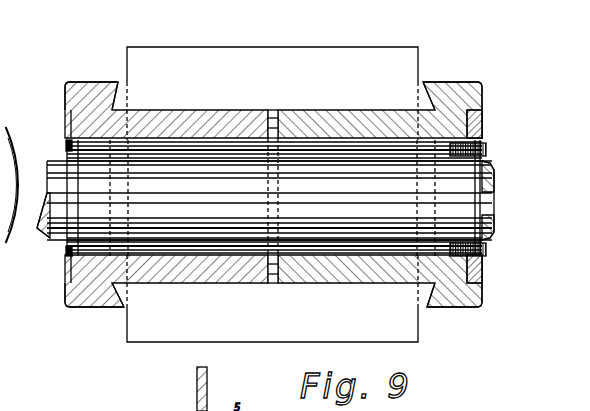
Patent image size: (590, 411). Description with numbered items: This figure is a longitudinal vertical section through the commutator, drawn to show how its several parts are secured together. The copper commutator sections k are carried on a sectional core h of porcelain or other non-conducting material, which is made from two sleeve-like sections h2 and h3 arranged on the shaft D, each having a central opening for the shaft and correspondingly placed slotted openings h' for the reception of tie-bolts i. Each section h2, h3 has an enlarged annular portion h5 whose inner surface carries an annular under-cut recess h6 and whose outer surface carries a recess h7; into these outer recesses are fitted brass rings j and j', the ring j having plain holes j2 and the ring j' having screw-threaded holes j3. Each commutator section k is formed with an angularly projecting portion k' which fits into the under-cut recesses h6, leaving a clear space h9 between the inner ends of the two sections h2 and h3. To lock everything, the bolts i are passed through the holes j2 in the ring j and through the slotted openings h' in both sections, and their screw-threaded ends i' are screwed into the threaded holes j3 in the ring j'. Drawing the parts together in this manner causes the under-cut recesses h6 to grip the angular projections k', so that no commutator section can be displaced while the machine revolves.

The core h is at (249, 291).
The sleeve-like section h2 is at (196, 101).
The sleeve-like section h3 is at (352, 114).
The enlarged annular portion h5 is at (485, 69).
The annular under-cut recess h6 is at (127, 93).
The recess h7 is at (67, 117).
The clear space h9 is at (272, 300).
The slotted opening h' is at (274, 202).
The commutator section k is at (272, 194).
The angularly projecting portion k' is at (269, 209).
The tie-bolt i is at (274, 227).
The screw-threaded end i' is at (473, 200).
The ring j is at (254, 191).
The ring j' is at (482, 110).
The hole j2 is at (66, 268).
The screw-threaded hole j3 is at (468, 300).
The shaft D is at (265, 200).